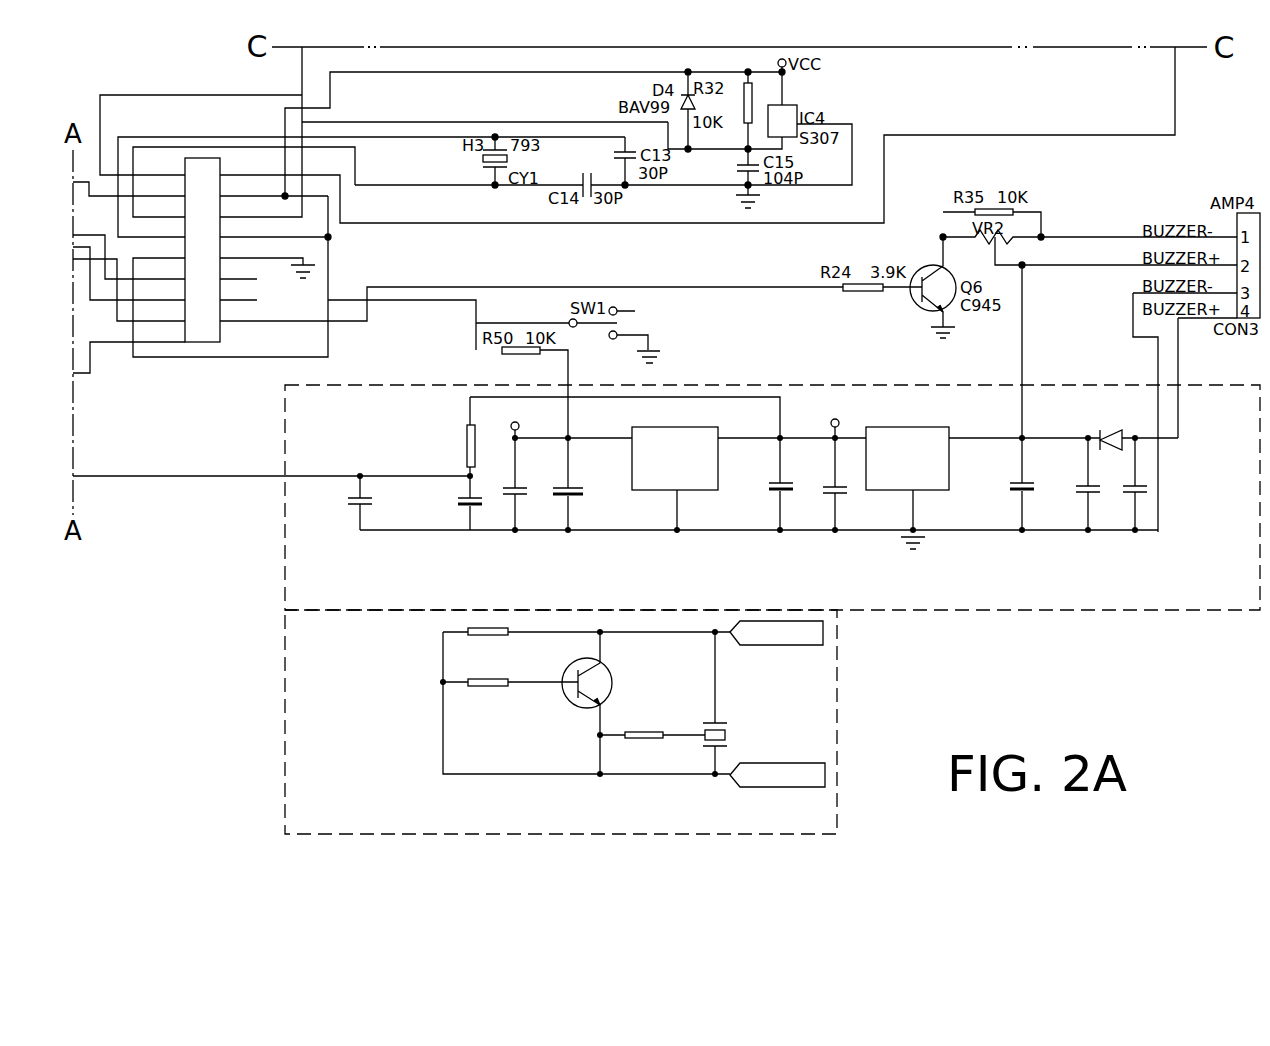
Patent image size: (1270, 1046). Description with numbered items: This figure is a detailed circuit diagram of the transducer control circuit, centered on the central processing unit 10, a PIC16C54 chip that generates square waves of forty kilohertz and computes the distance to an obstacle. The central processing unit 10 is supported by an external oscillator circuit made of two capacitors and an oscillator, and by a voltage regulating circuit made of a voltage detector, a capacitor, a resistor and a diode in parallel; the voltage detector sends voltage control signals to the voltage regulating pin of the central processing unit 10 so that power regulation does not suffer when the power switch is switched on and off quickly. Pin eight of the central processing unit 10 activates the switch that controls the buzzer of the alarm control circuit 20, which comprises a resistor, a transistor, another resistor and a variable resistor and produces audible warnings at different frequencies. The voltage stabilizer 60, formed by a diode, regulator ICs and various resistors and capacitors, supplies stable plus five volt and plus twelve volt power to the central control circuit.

The central processing unit 10 is at (200, 332).
The alarm control circuit 20 is at (827, 718).
The voltage stabilizer 60 is at (1055, 597).